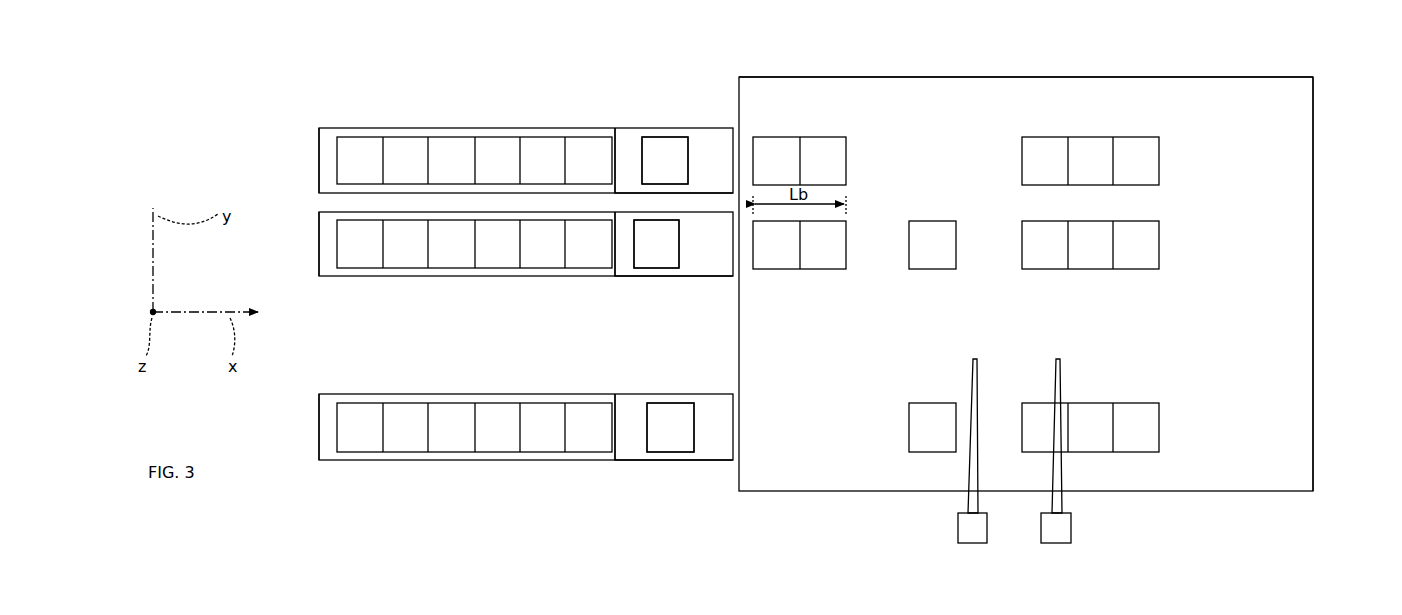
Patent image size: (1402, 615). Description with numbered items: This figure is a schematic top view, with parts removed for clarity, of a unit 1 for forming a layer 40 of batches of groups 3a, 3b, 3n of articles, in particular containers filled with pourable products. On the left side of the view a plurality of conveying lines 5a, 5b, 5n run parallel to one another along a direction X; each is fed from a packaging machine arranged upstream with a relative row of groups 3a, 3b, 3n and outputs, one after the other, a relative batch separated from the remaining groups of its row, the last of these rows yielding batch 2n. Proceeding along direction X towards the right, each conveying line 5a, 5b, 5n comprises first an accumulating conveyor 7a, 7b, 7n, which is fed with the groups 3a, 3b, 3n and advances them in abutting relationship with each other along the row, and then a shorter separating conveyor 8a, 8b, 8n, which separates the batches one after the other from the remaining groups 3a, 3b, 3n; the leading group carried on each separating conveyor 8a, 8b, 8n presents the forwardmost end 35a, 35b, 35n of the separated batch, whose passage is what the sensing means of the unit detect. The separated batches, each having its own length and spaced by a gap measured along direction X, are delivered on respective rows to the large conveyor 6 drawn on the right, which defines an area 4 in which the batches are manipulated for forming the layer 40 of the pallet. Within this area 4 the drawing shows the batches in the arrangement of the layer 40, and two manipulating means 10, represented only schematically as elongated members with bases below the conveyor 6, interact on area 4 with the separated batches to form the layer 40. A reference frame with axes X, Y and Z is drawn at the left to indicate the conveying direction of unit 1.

The unit 1 is at (1277, 55).
The batch 2n is at (671, 434).
The group of articles 3a is at (448, 150).
The group of articles 3b is at (452, 246).
The group of articles 3n is at (446, 432).
The area 4 is at (1232, 82).
The conveying line 5a is at (308, 155).
The conveying line 5b is at (308, 244).
The conveying line 5n is at (308, 426).
The conveyor 6 is at (1290, 257).
The accumulating conveyor 7a is at (327, 145).
The accumulating conveyor 7b is at (328, 256).
The accumulating conveyor 7n is at (327, 442).
The separating conveyor 8a is at (628, 152).
The separating conveyor 8b is at (622, 250).
The separating conveyor 8n is at (629, 434).
The manipulating means 10 is at (966, 528).
The forwardmost end 35a is at (692, 157).
The forwardmost end 35b is at (686, 246).
The forwardmost end 35n is at (698, 441).
The layer 40 is at (1075, 128).